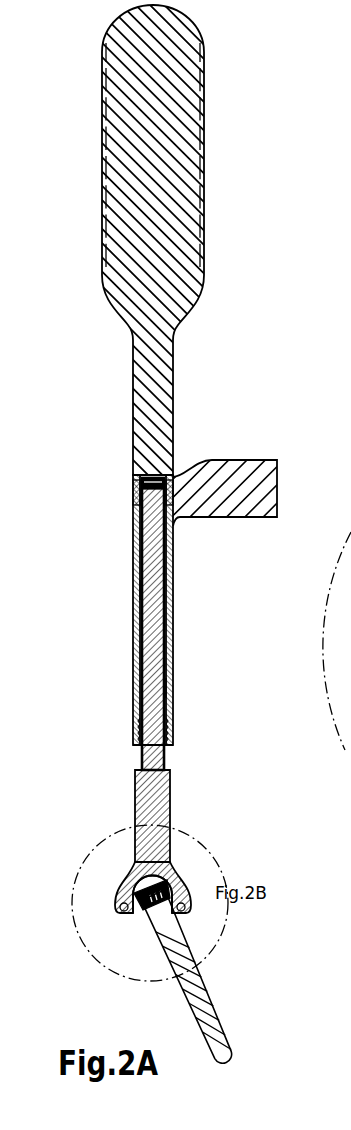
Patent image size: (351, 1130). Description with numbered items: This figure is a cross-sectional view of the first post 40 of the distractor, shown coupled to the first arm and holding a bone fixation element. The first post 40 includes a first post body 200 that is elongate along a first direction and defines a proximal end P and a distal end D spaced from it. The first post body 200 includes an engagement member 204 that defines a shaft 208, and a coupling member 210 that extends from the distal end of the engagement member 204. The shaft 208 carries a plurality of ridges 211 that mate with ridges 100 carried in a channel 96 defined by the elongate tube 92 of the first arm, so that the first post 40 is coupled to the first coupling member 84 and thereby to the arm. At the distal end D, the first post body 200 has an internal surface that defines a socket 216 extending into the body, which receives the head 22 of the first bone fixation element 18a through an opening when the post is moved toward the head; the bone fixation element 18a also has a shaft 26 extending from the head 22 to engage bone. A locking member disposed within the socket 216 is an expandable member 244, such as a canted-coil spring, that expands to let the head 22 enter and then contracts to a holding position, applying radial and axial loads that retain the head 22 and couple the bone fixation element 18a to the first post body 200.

The first post 40 is at (90, 641).
The first post body 200 is at (174, 559).
The elongate tube 92 is at (133, 573).
The engagement member 204 is at (135, 537).
The first coupling member 84 is at (173, 641).
The proximal end P is at (136, 462).
The shaft 208 is at (165, 590).
The ridges 100 is at (165, 688).
The ridges 211 is at (140, 700).
The channel 96 is at (175, 752).
The socket 216 is at (134, 866).
The coupling member 210 is at (183, 862).
The distal end D is at (120, 913).
The expandable member 244 is at (193, 913).
The head 22 is at (135, 912).
The first bone fixation element 18a is at (244, 1000).
The shaft 26 is at (220, 1040).